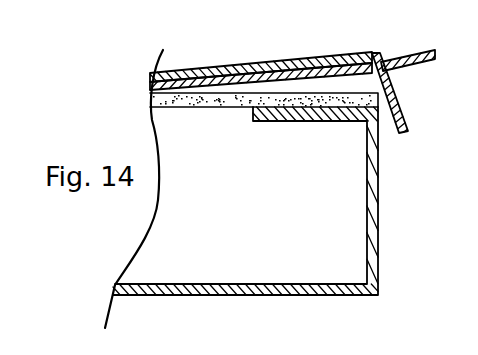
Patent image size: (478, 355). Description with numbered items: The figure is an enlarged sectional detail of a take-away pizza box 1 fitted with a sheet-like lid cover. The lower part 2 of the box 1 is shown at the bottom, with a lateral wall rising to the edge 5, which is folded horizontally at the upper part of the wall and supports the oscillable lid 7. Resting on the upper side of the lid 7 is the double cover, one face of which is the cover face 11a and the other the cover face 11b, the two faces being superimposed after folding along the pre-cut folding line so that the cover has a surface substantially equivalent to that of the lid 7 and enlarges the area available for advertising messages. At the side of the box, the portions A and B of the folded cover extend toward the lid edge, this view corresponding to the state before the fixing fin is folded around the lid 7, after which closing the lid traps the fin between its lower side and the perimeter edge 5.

The cover face 11a is at (262, 61).
The inner skin layer 11b is at (290, 80).
The skin portion A is at (403, 56).
The skin portion B is at (402, 109).
The lid 7 is at (228, 101).
The edge 5 is at (332, 113).
The box 1 is at (267, 201).
The lower part of the box 2 is at (238, 284).